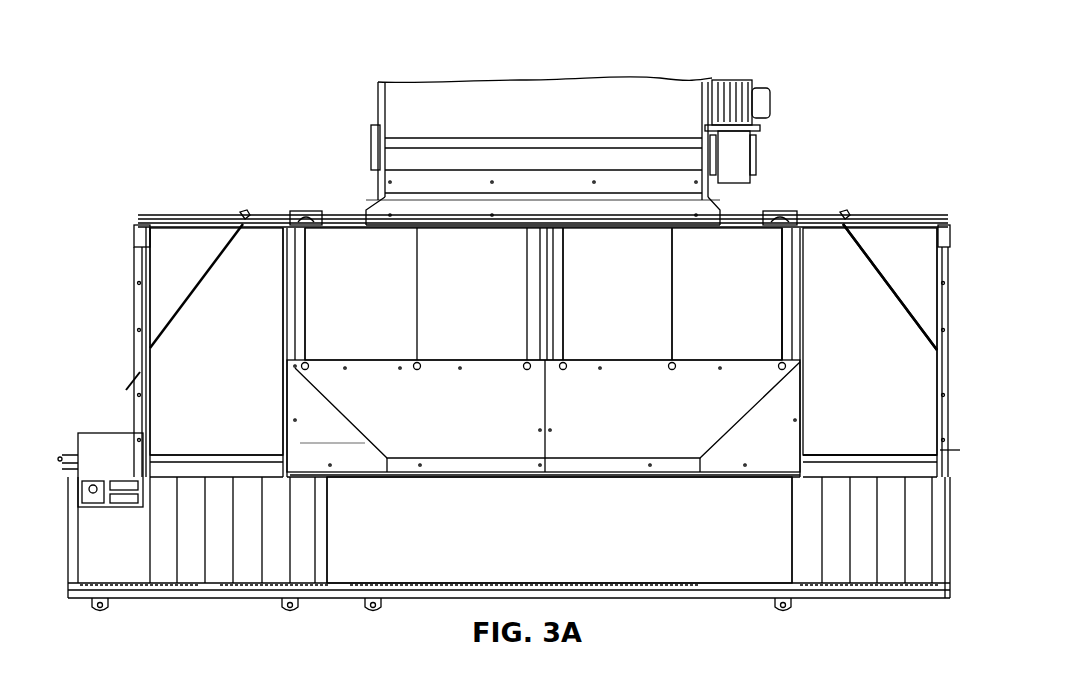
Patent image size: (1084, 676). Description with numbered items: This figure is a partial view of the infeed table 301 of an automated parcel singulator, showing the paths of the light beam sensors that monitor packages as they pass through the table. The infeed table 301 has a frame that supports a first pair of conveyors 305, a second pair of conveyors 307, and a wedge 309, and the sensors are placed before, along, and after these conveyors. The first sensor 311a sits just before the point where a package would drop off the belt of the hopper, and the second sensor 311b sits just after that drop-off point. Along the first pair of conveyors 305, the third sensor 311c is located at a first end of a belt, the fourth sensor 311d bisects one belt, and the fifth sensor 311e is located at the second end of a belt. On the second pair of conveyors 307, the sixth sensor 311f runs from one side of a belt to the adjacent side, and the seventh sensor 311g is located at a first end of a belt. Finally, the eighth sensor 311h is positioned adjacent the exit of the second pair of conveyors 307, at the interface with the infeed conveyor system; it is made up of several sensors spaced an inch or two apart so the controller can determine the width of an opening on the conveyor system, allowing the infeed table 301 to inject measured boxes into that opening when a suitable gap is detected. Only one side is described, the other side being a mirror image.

The infeed table 301 is at (160, 172).
The first pair of conveyors 305 is at (490, 343).
The second pair of conveyors 307 is at (248, 334).
The wedge 309 is at (629, 421).
The first sensor 311a is at (455, 132).
The second sensor 311b is at (518, 196).
The third sensor 311c is at (566, 261).
The fourth sensor 311d is at (672, 283).
The fifth sensor 311e is at (782, 288).
The sixth sensor 311f is at (905, 352).
The seventh sensor 311g is at (903, 456).
The eighth sensor 311h is at (784, 522).